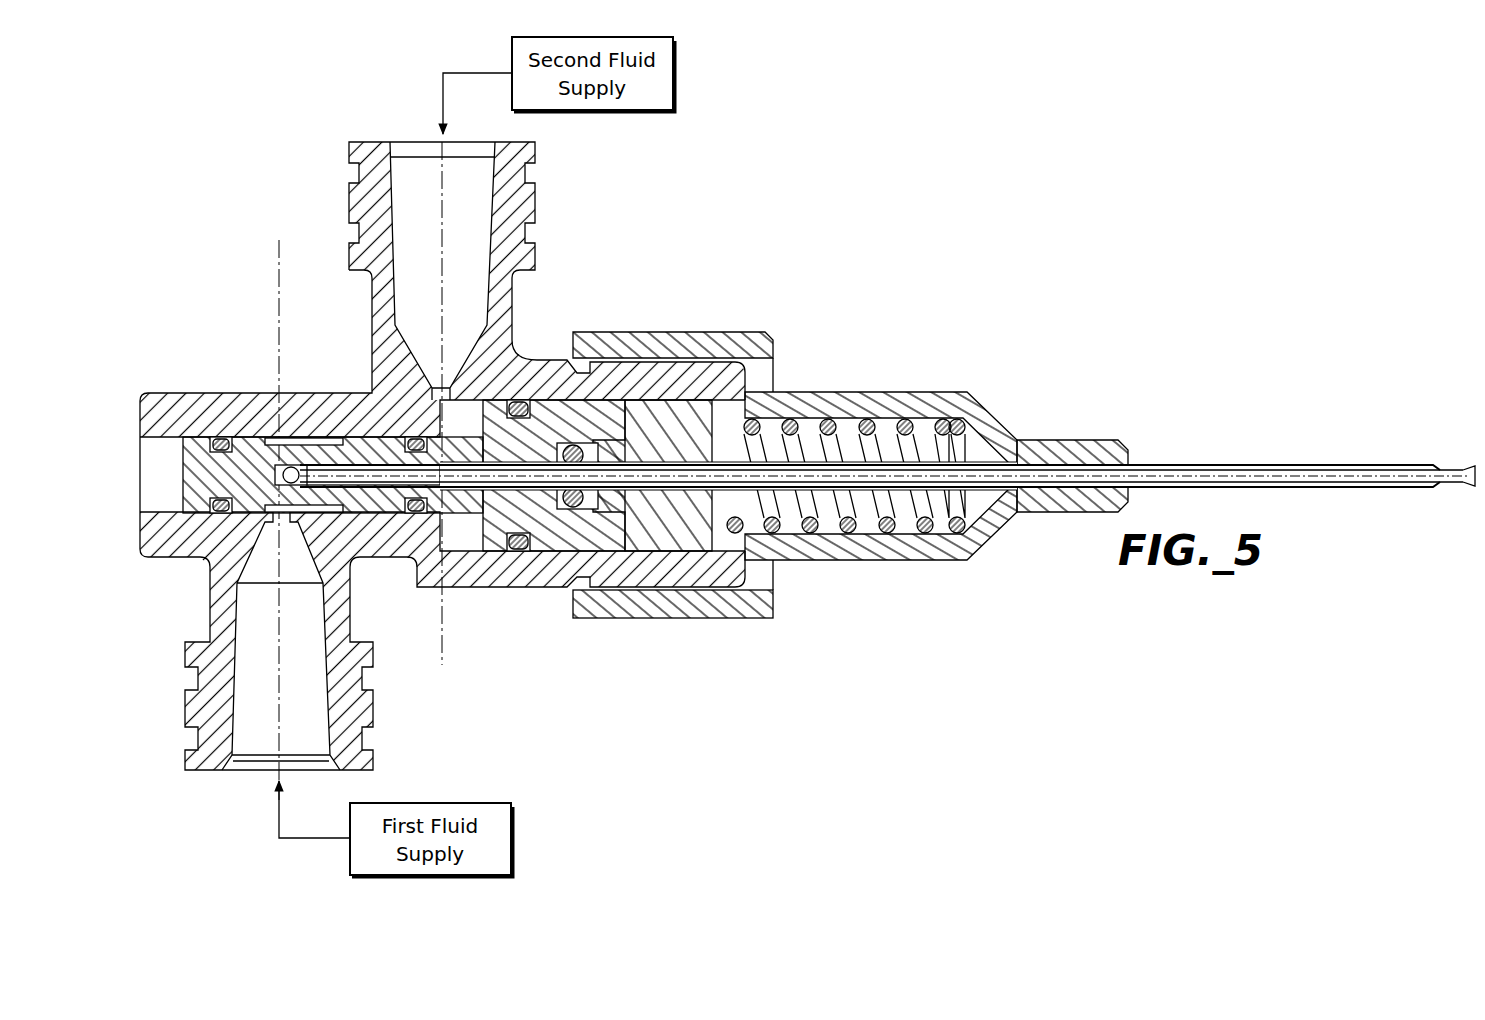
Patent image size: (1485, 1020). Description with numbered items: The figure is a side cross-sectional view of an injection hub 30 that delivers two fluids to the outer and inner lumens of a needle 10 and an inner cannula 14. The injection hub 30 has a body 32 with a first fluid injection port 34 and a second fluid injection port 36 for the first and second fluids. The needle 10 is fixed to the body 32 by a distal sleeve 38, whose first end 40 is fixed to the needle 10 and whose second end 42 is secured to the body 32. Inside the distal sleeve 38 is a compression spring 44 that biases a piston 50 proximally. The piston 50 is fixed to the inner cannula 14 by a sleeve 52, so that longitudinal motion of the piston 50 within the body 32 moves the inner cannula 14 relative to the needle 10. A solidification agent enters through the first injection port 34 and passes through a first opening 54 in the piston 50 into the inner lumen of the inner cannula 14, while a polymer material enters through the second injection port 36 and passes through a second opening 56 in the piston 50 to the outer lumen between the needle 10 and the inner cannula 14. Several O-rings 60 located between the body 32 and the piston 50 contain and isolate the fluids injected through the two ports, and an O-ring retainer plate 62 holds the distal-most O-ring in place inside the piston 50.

The needle 10 is at (1264, 493).
The inner cannula 14 is at (1254, 461).
The injection hub 30 is at (802, 456).
The body 32 is at (212, 400).
The first fluid injection port 34 is at (364, 713).
The second fluid injection port 36 is at (527, 190).
The distal sleeve 38 is at (973, 390).
The first end 40 is at (1097, 443).
The second end 42 is at (622, 332).
The compression spring 44 is at (935, 540).
The piston 50 is at (193, 505).
The sleeve 52 is at (373, 452).
The first opening 54 is at (268, 438).
The second opening 56 is at (465, 440).
The O-rings 60 is at (518, 402).
The O-ring retainer plate 62 is at (672, 540).